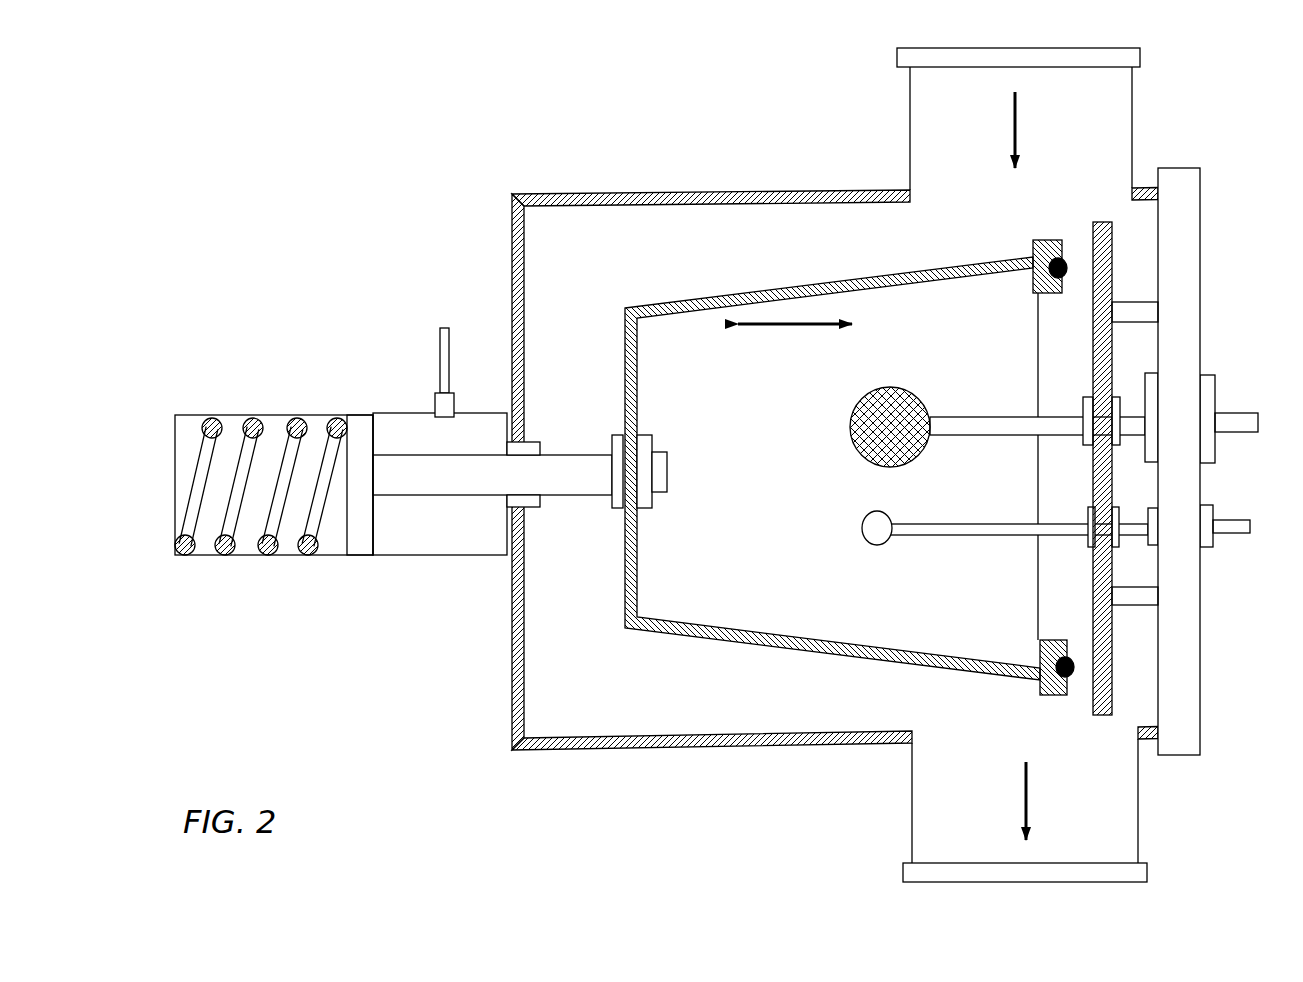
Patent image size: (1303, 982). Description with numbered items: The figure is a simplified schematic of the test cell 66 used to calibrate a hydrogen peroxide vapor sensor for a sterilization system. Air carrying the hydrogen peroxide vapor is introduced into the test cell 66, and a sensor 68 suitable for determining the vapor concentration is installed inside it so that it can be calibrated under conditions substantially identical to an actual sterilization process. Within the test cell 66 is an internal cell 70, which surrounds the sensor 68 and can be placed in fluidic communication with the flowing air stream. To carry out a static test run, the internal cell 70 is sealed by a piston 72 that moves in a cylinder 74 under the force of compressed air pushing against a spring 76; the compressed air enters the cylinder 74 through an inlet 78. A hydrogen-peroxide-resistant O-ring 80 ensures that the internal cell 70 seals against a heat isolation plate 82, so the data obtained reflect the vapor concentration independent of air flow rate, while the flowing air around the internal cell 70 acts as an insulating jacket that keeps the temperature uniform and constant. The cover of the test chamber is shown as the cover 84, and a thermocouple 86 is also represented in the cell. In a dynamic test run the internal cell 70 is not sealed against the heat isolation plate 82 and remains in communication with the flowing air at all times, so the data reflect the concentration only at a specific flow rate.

The test cell 66 is at (720, 182).
The sensor 68 is at (875, 420).
The internal cell 70 is at (660, 685).
The piston 72 is at (488, 480).
The cylinder 74 is at (430, 540).
The spring 76 is at (240, 468).
The inlet 78 is at (445, 322).
The O-ring 80 is at (1075, 670).
The heat isolation plate 82 is at (1102, 268).
The cover 84 is at (1180, 383).
The thermocouple 86 is at (870, 532).